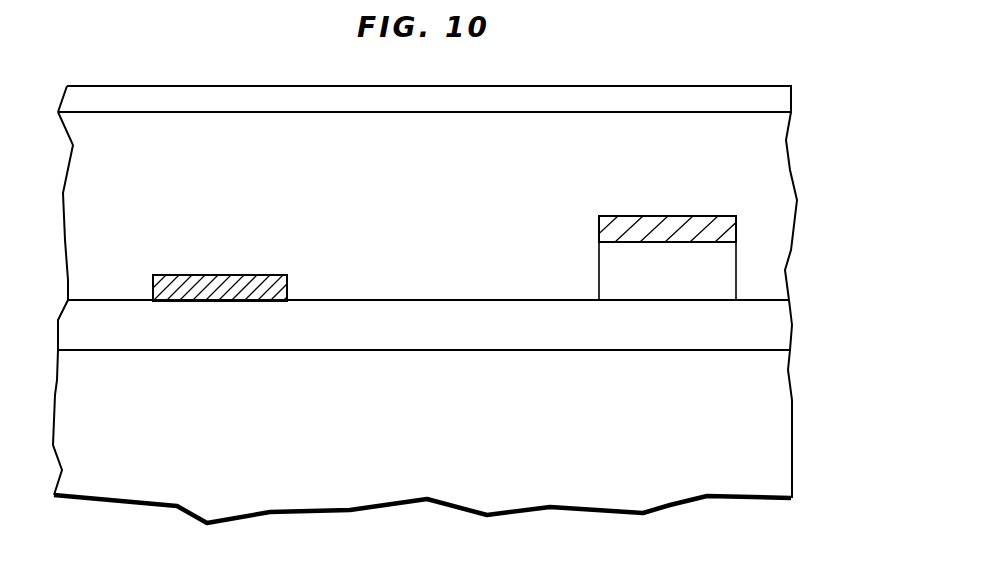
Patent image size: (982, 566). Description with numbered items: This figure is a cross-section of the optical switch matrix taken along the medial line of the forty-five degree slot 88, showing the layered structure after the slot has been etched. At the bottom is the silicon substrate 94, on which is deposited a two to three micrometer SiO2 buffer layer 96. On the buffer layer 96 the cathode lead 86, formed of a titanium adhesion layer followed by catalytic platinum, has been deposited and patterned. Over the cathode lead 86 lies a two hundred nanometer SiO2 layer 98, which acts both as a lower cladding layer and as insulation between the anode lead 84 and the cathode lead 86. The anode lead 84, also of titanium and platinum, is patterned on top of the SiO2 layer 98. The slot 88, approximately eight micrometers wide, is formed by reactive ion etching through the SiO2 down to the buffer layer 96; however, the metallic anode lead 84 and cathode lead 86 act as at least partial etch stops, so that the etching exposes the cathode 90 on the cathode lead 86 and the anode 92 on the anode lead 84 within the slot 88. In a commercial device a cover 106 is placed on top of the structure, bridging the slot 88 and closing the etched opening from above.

The cover 106 is at (792, 100).
The slot 88 is at (426, 197).
The buffer layer 96 is at (778, 335).
The silicon substrate 94 is at (768, 463).
The cathode lead 86 is at (289, 283).
The cathode 90 is at (196, 262).
The SiO2 layer 98 is at (736, 270).
The anode lead 84 is at (736, 230).
The anode 92 is at (646, 200).